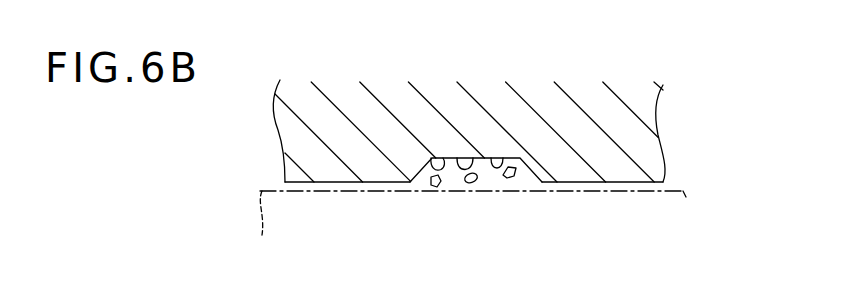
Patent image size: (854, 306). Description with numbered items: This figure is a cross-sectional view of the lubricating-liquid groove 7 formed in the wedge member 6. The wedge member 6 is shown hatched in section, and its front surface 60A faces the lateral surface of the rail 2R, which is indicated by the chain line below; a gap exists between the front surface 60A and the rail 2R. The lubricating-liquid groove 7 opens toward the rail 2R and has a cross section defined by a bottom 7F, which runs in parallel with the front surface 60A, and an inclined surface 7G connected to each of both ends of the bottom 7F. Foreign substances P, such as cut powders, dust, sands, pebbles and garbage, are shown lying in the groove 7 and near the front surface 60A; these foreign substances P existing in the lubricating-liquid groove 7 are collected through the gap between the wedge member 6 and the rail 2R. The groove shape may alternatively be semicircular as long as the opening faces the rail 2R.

The wedge member 6 is at (645, 108).
The lubricating-liquid groove 7 is at (457, 158).
The inclined surface 7G is at (435, 156).
The bottom 7F is at (503, 158).
The front surface 60A is at (373, 182).
The rail 2R is at (672, 192).
The foreign substances P is at (433, 188).